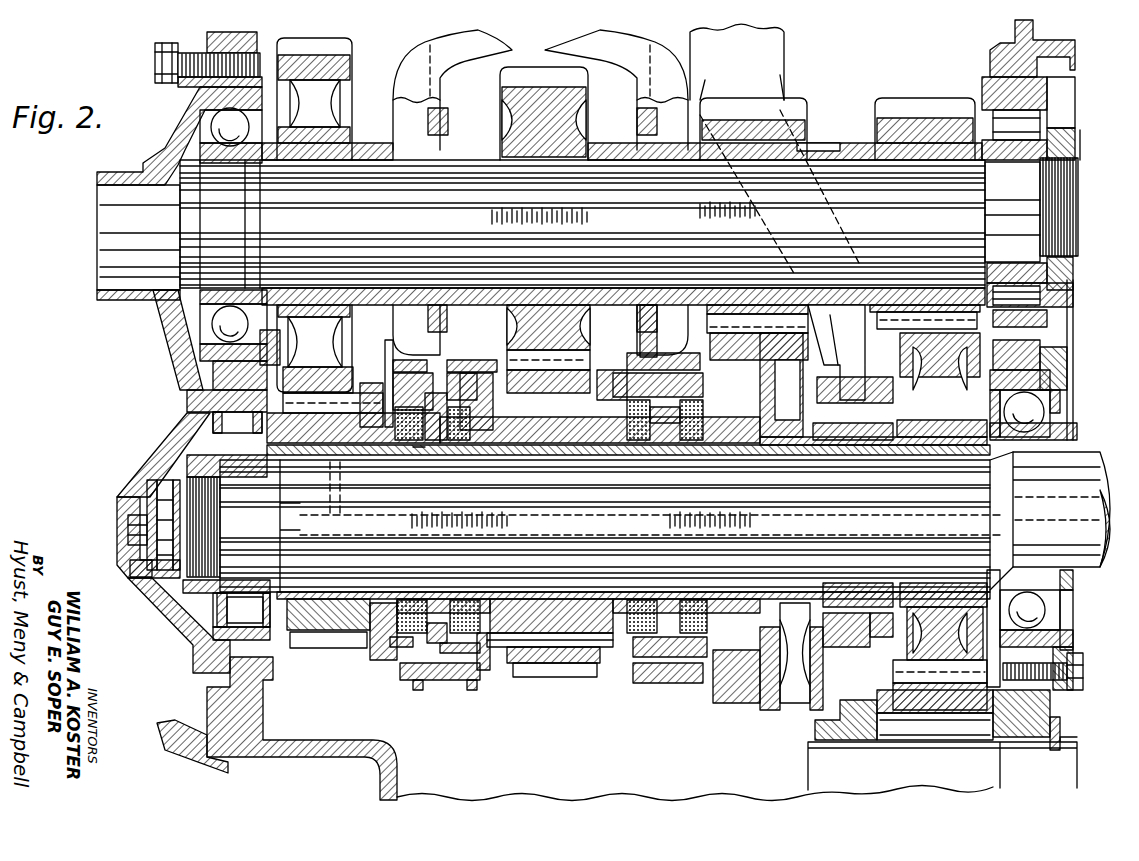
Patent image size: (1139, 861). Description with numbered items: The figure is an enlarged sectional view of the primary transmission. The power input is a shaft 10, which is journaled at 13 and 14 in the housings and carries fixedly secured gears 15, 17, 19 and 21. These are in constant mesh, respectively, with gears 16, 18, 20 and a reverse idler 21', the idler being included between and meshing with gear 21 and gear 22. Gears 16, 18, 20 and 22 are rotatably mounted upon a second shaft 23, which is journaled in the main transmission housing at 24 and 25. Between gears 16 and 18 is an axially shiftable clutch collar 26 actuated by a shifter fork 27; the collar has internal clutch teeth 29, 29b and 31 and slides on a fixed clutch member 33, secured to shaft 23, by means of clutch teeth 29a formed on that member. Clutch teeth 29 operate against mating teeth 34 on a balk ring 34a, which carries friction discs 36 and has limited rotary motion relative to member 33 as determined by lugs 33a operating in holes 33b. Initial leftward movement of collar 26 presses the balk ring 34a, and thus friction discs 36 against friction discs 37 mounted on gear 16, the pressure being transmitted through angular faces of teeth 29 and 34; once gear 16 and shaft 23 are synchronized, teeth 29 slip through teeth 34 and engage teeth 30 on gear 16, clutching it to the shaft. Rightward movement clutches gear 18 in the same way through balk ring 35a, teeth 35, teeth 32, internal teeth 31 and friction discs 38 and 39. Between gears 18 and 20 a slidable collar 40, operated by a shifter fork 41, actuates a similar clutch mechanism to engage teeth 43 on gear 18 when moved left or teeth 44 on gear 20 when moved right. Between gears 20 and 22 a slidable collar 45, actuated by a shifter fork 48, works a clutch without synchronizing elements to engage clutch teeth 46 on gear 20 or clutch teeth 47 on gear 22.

The shaft 10 is at (119, 207).
The journal 13 is at (203, 311).
The journal 14 is at (988, 90).
The gear 15 is at (340, 47).
The gear 16 is at (316, 640).
The gear 17 is at (503, 100).
The gear 18 is at (550, 668).
The gear 19 is at (800, 106).
The gear 20 is at (758, 703).
The gear 21 is at (873, 255).
The reverse idler 21' is at (911, 693).
The gear 22 is at (912, 660).
The shaft 23 is at (235, 500).
The journal 24 is at (183, 593).
The journal 25 is at (1065, 628).
The clutch collar 26 is at (405, 685).
The shifter fork 27 is at (442, 88).
The clutch teeth 29 is at (413, 375).
The clutch teeth 29a is at (432, 680).
The clutch teeth 29b is at (426, 360).
The teeth 30 is at (378, 369).
The internal teeth 31 is at (455, 362).
The teeth 32 is at (493, 377).
The fixed clutch member 33 is at (425, 457).
The lugs 33a is at (449, 595).
The holes 33b is at (418, 450).
The mating teeth 34 is at (392, 362).
The balk ring 34a is at (380, 655).
The teeth 35 is at (500, 397).
The balk ring 35a is at (482, 660).
The friction discs 36 is at (357, 425).
The friction discs 37 is at (372, 605).
The friction discs 38 is at (518, 420).
The friction discs 39 is at (505, 600).
The slidable collar 40 is at (660, 655).
The shifter fork 41 is at (640, 315).
The teeth 43 is at (615, 660).
The teeth 44 is at (712, 668).
The slidable collar 45 is at (848, 637).
The clutch teeth 46 is at (803, 620).
The clutch teeth 47 is at (860, 640).
The shifter fork 48 is at (768, 78).